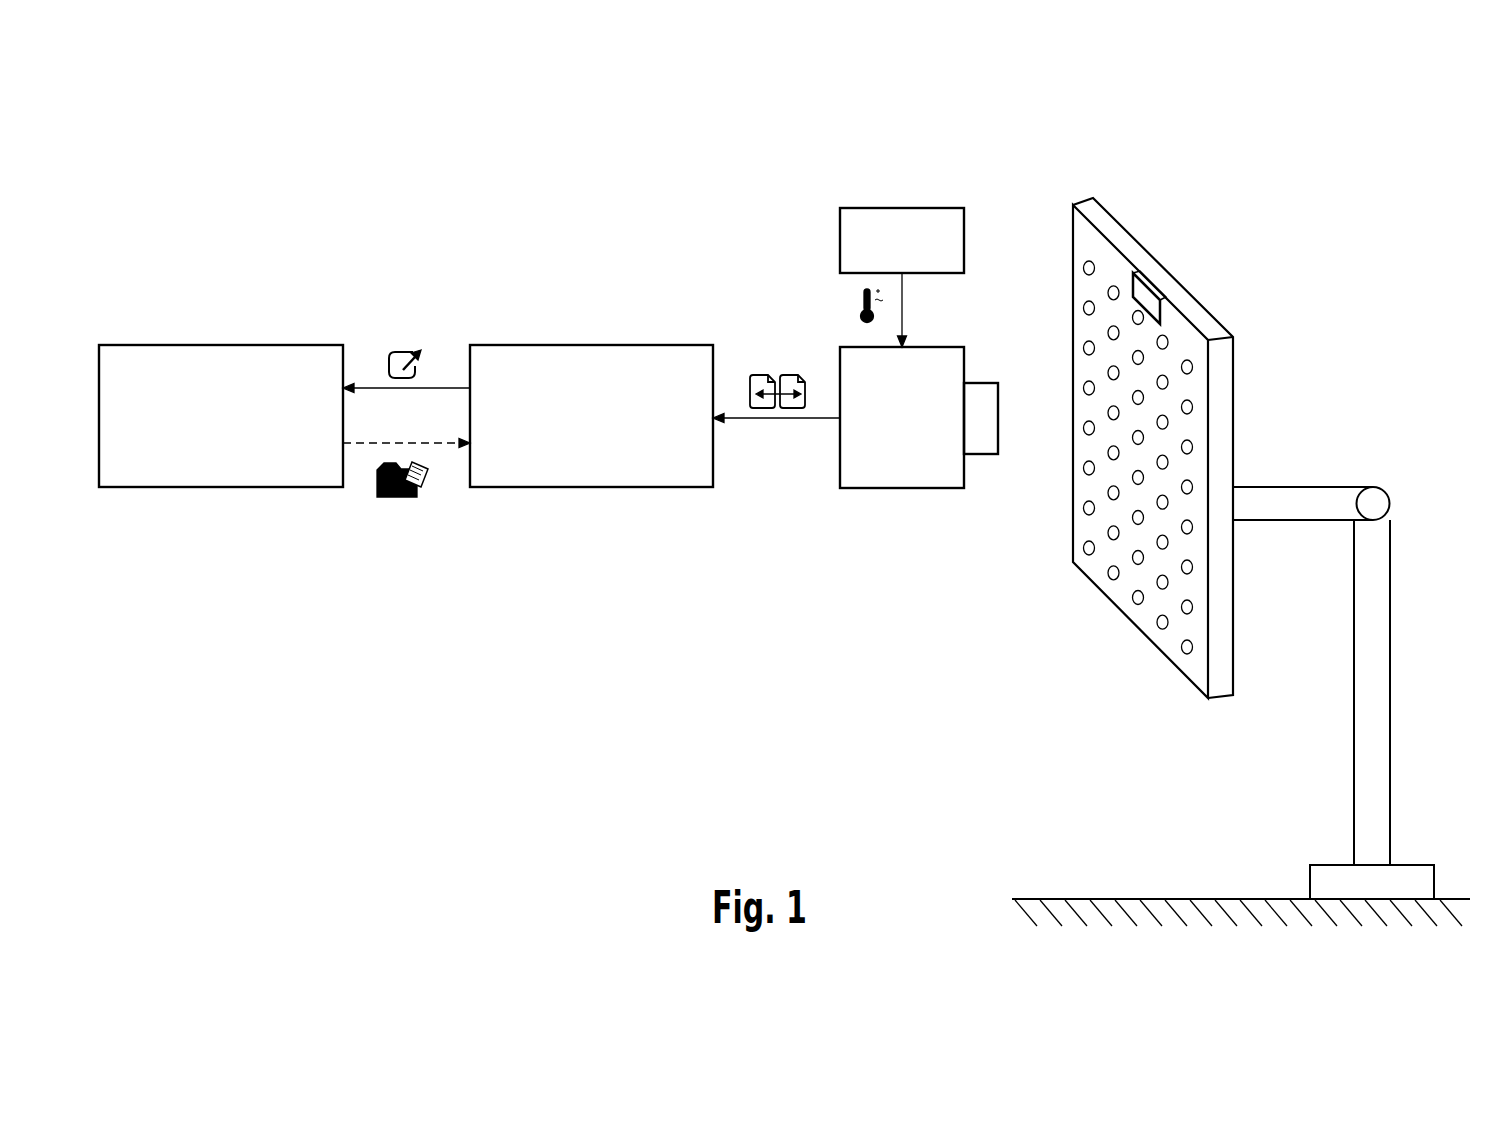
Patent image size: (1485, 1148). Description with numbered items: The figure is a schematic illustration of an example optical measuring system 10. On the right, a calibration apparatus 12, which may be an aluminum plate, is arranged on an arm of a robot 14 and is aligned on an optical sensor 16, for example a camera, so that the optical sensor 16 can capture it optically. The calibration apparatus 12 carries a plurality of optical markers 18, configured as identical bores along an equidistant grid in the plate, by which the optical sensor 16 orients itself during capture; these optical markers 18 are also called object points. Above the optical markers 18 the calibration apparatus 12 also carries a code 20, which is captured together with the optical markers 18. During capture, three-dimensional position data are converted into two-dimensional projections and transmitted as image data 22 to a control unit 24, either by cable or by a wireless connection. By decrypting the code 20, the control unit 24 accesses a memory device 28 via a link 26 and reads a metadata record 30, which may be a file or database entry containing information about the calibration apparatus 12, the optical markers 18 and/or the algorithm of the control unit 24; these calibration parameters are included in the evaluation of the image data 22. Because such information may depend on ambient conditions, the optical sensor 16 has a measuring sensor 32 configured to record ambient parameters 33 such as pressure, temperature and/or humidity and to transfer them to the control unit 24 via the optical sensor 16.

The optical measuring system 10 is at (495, 152).
The calibration apparatus 12 is at (1157, 423).
The robot 14 is at (1313, 487).
The optical sensor 16 is at (905, 488).
The optical marker 18 is at (1092, 262).
The code 20 is at (1147, 293).
The image data 22 is at (785, 375).
The control unit 24 is at (590, 345).
The link 26 is at (400, 348).
The memory device 28 is at (219, 345).
The metadata record 30 is at (400, 498).
The measuring sensor 32 is at (900, 208).
The ambient parameters 33 is at (860, 300).